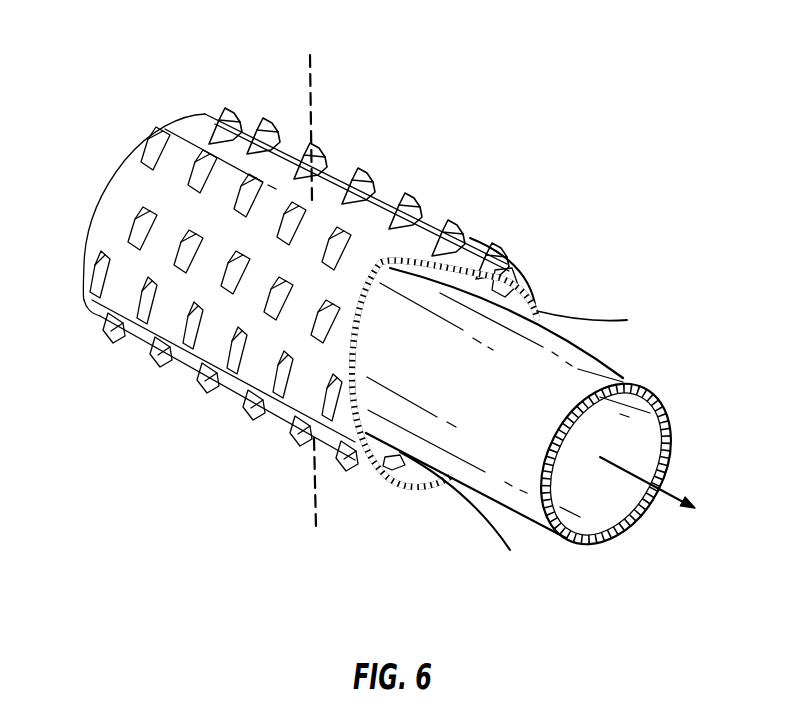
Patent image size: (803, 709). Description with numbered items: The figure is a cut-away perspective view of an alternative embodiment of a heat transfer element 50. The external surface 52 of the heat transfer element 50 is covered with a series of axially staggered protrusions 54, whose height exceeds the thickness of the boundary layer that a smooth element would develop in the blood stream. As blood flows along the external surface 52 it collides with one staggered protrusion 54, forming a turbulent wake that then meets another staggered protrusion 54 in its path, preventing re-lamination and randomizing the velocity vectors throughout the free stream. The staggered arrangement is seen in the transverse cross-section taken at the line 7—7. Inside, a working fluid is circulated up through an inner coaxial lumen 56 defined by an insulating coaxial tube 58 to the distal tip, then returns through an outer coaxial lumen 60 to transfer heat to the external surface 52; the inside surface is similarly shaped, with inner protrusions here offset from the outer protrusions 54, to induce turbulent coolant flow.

The section line 7— 7 is at (310, 55).
The heat transfer element 50 is at (363, 329).
The external surface 52 is at (98, 250).
The staggered protrusions 54 is at (133, 216).
The inner coaxial lumen 56 is at (647, 508).
The insulating coaxial tube 58 is at (614, 370).
The outer coaxial lumen 60 is at (577, 312).